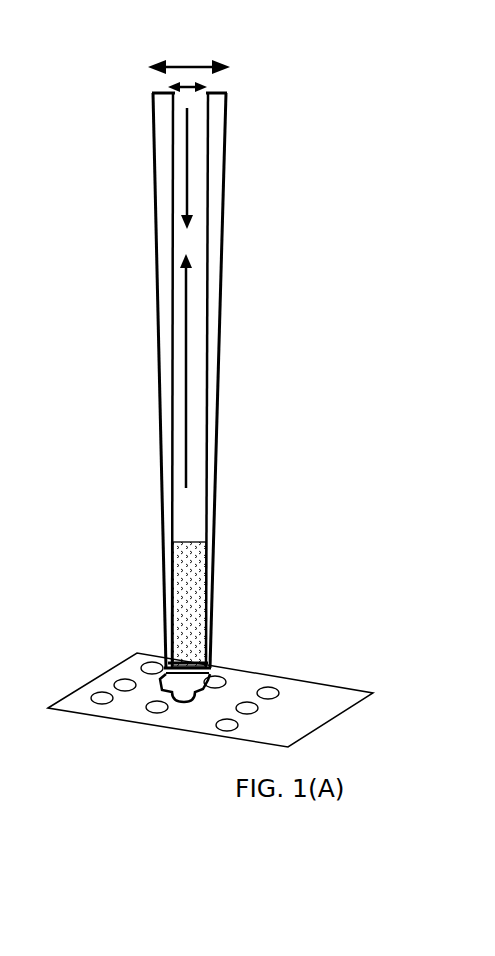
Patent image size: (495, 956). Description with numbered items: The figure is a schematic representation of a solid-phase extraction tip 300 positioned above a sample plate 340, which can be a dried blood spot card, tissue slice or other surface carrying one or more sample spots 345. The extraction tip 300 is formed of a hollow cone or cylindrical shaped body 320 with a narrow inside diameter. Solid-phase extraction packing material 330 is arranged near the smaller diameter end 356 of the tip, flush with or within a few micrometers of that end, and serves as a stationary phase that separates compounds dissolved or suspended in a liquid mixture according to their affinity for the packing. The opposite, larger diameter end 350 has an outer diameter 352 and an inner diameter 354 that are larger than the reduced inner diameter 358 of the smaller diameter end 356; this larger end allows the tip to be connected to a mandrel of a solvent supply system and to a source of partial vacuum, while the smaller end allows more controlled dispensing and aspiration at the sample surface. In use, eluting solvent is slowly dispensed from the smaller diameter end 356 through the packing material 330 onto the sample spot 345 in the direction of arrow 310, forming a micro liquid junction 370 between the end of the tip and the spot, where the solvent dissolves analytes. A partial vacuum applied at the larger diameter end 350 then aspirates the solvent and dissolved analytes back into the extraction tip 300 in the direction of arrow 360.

The extraction tip 300 is at (119, 193).
The arrow 310 is at (195, 160).
The body 320 is at (153, 308).
The solid-phase extraction packing material 330 is at (186, 594).
The sample plate 340 is at (325, 717).
The sample spot 345 is at (184, 703).
The larger diameter end 350 is at (147, 90).
The outer diameter 352 is at (190, 63).
The inner diameter 354 is at (210, 88).
The smaller diameter end 356 is at (222, 666).
The reduced inner diameter 358 is at (209, 665).
The arrow 360 is at (199, 317).
The micro liquid junction 370 is at (159, 684).